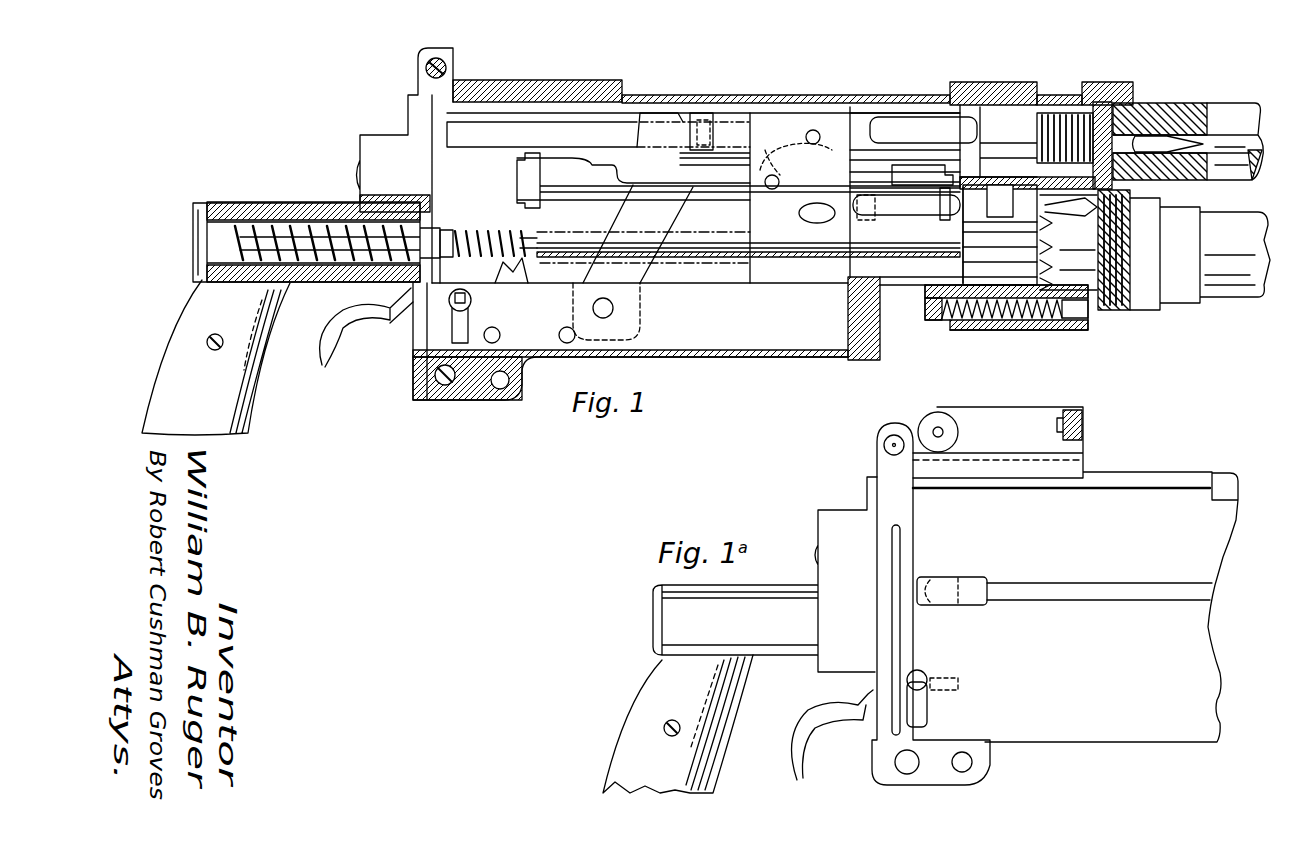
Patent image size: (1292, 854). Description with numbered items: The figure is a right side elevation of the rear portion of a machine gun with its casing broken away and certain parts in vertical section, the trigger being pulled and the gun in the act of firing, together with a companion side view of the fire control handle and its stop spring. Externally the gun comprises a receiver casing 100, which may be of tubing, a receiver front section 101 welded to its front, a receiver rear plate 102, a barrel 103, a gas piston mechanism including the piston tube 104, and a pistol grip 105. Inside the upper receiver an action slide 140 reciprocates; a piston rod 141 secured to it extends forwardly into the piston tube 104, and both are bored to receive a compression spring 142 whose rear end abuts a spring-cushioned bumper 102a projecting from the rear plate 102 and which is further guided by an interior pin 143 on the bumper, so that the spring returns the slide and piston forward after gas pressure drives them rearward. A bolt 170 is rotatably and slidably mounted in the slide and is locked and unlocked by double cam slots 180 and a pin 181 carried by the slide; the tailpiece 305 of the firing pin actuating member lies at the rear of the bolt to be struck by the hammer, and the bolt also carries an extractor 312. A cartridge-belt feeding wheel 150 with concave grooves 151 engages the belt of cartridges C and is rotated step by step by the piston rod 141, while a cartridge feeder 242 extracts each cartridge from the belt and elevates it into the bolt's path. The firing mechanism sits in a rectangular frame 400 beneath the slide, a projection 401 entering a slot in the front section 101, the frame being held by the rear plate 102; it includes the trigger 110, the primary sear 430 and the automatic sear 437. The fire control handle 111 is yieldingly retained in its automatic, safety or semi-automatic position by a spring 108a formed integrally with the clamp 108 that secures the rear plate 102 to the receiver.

In FIG. 1, the receiver casing 100 is at (640, 87).
In FIG. 1A, the receiver casing 100 is at (1152, 460).
In FIG. 1, the receiver front section 101 is at (968, 87).
In FIG. 1, the receiver rear plate 102 is at (408, 105).
In FIG. 1A, the receiver rear plate 102 is at (837, 517).
In FIG. 1, the spring-cushioned bumper 102a is at (430, 193).
In FIG. 1, the barrel 103 is at (1168, 110).
In FIG. 1, the piston tube 104 is at (1237, 217).
In FIG. 1, the pistol grip 105 is at (182, 313).
In FIG. 1A, the pistol grip 105 is at (635, 722).
In FIG. 1A, the clamp 108 is at (887, 515).
In FIG. 1A, the spring 108a is at (907, 637).
In FIG. 1, the trigger 110 is at (340, 318).
In FIG. 1A, the trigger 110 is at (790, 743).
In FIG. 1, the fire control handle 111 is at (457, 333).
In FIG. 1A, the fire control handle 111 is at (920, 712).
In FIG. 1, the action slide 140 is at (757, 123).
In FIG. 1, the piston rod 141 is at (905, 280).
In FIG. 1, the compression spring 142 is at (473, 233).
In FIG. 1, the interior pin 143 is at (557, 229).
In FIG. 1, the cartridge-belt feeding wheel 150 is at (973, 322).
In FIG. 1, the concave axially disposed grooves 151 is at (963, 226).
In FIG. 1, the bolt 170 is at (712, 118).
In FIG. 1, the double cam slots 180 is at (770, 150).
In FIG. 1, the pin 181 is at (810, 131).
In FIG. 1, the cartridge feeder 242 is at (700, 190).
In FIG. 1, the tailpiece 305 is at (692, 118).
In FIG. 1, the extractor 312 is at (970, 137).
In FIG. 1, the frame 400 is at (770, 332).
In FIG. 1, the projection 401 is at (855, 350).
In FIG. 1, the primary sear 430 is at (530, 262).
In FIG. 1, the automatic sear 437 is at (445, 236).
In FIG. 1, the cartridges C is at (1063, 200).